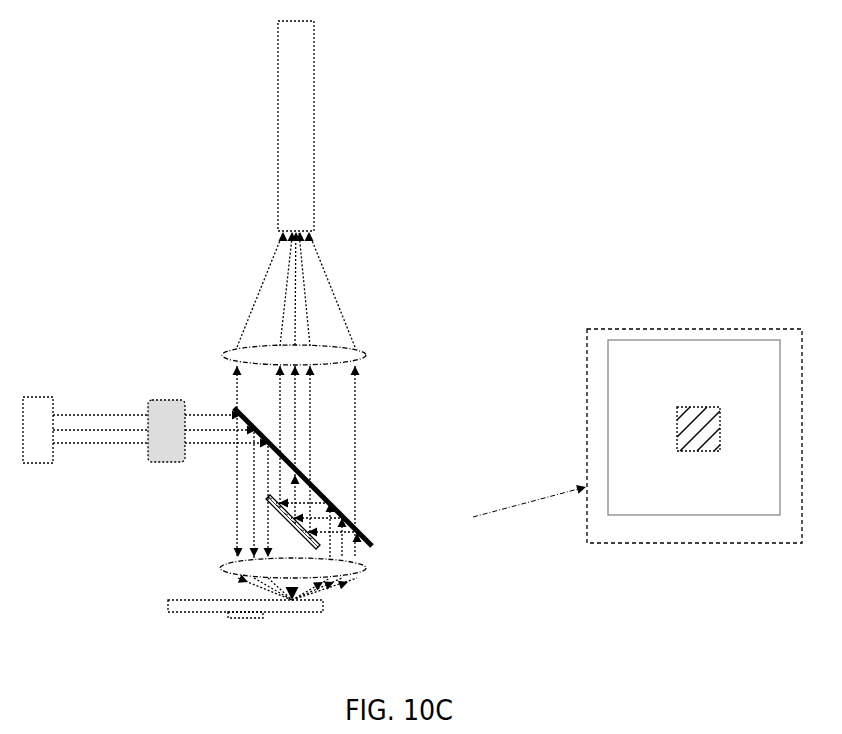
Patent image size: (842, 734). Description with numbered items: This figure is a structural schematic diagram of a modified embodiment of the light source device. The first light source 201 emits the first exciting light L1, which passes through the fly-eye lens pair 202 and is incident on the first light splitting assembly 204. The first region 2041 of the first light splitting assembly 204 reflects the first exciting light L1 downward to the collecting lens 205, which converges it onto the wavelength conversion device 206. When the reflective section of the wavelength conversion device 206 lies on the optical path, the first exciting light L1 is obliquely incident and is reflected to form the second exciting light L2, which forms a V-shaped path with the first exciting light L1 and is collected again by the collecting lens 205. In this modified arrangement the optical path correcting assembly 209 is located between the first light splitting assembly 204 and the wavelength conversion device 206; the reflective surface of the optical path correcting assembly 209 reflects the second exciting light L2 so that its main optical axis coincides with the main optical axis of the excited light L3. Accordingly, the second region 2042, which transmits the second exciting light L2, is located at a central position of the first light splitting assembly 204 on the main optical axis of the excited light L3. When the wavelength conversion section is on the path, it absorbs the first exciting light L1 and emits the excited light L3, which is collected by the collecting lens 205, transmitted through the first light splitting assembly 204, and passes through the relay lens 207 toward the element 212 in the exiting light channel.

The first light source 201 is at (40, 463).
The fly-eye lens pair 202 is at (147, 407).
The first light splitting assembly 204 is at (375, 537).
The first region 2041 is at (628, 378).
The second region 2042 is at (690, 405).
The collecting lens 205 is at (366, 568).
The wavelength conversion device 206 is at (185, 612).
The relay lens 207 is at (367, 358).
The optical path correcting assembly 209 is at (358, 548).
The detector 212 is at (278, 138).
The first exciting light L1 is at (90, 443).
The second exciting light L2 is at (305, 422).
The excited light L3 is at (330, 283).